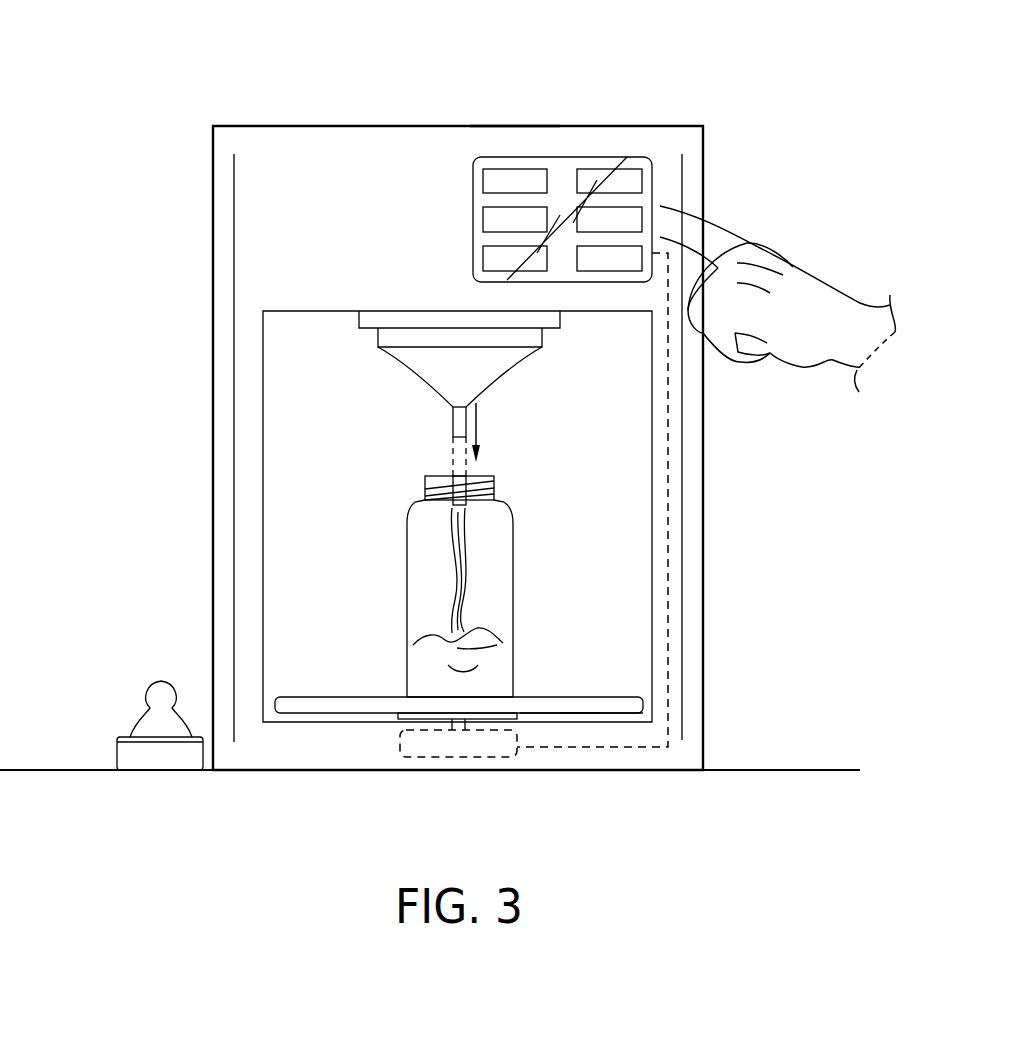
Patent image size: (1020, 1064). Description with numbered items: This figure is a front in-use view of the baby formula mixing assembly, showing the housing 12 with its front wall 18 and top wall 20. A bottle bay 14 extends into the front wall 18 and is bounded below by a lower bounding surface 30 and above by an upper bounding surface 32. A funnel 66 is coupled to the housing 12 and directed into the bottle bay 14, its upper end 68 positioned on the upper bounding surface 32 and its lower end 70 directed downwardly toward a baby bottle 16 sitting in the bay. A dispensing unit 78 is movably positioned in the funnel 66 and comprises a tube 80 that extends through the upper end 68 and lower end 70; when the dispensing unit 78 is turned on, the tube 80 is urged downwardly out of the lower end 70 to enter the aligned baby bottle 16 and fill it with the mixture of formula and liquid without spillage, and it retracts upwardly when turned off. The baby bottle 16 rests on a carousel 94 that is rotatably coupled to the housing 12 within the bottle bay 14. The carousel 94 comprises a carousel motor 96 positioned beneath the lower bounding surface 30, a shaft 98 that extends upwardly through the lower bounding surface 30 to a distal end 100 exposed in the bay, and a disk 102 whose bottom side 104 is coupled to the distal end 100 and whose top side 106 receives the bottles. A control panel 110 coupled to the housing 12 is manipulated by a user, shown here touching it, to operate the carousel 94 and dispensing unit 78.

The housing 12 is at (213, 143).
The bottle bay 14 is at (592, 509).
The baby bottles 16 is at (413, 510).
The front wall 18 is at (368, 153).
The top wall 20 is at (505, 125).
The lower bounding surface 30 is at (625, 720).
The upper bounding surface 32 is at (293, 312).
The funnel 66 is at (518, 352).
The upper end 68 is at (370, 311).
The lower end 70 is at (453, 407).
The dispensing unit 78 is at (388, 386).
The tube 80 is at (466, 424).
The carousel 94 is at (330, 680).
The carousel motor 96 is at (422, 757).
The shaft 98 is at (473, 728).
The distal end 100 is at (450, 713).
The disk 102 is at (600, 715).
The bottom side 104 is at (565, 715).
The top side 106 is at (580, 698).
The control panel 110 is at (607, 158).